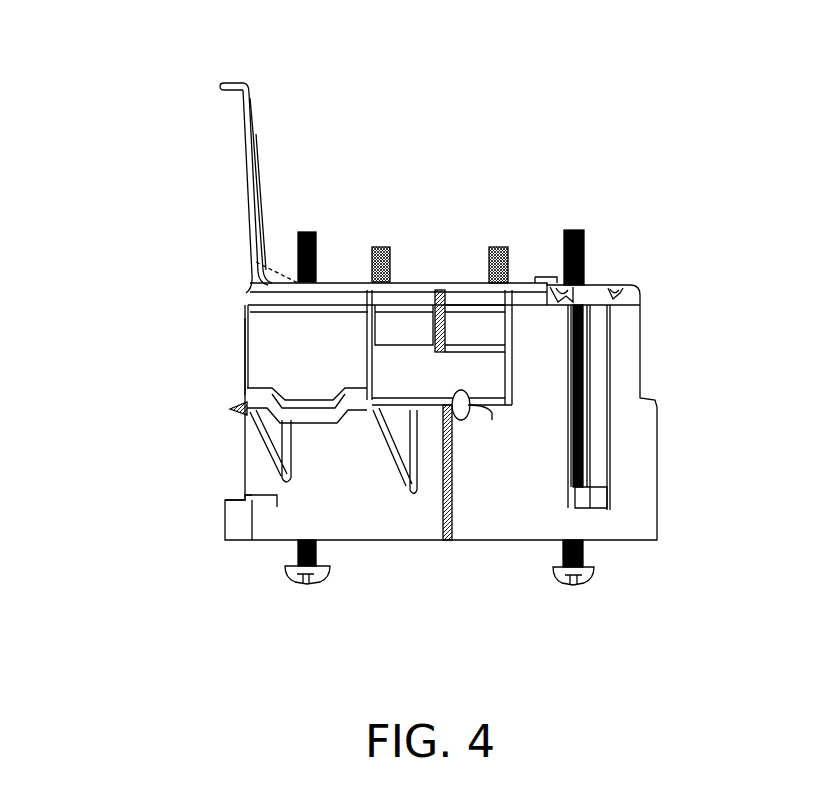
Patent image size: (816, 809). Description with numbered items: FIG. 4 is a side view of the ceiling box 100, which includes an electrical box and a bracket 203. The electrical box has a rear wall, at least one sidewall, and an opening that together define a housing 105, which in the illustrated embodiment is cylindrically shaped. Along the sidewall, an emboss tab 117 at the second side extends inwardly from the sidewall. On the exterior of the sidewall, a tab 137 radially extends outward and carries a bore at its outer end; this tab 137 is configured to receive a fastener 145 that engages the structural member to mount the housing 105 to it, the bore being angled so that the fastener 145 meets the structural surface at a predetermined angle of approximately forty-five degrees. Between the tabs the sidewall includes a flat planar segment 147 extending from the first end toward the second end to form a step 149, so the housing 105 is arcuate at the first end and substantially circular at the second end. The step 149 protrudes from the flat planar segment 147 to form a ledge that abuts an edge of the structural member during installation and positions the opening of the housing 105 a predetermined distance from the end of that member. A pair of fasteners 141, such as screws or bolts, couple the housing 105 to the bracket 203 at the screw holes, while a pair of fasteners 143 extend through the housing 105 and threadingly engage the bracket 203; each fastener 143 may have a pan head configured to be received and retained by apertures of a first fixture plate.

The ceiling box 100 is at (138, 52).
The housing 105 is at (642, 345).
The emboss tab 117 is at (600, 508).
The tab 137 is at (492, 410).
The fastener 141 is at (383, 246).
The fastener 143 is at (307, 231).
The fastener 145 is at (423, 413).
The flat planar segment 147 is at (246, 365).
The step 149 is at (228, 500).
The bracket 203 is at (254, 103).